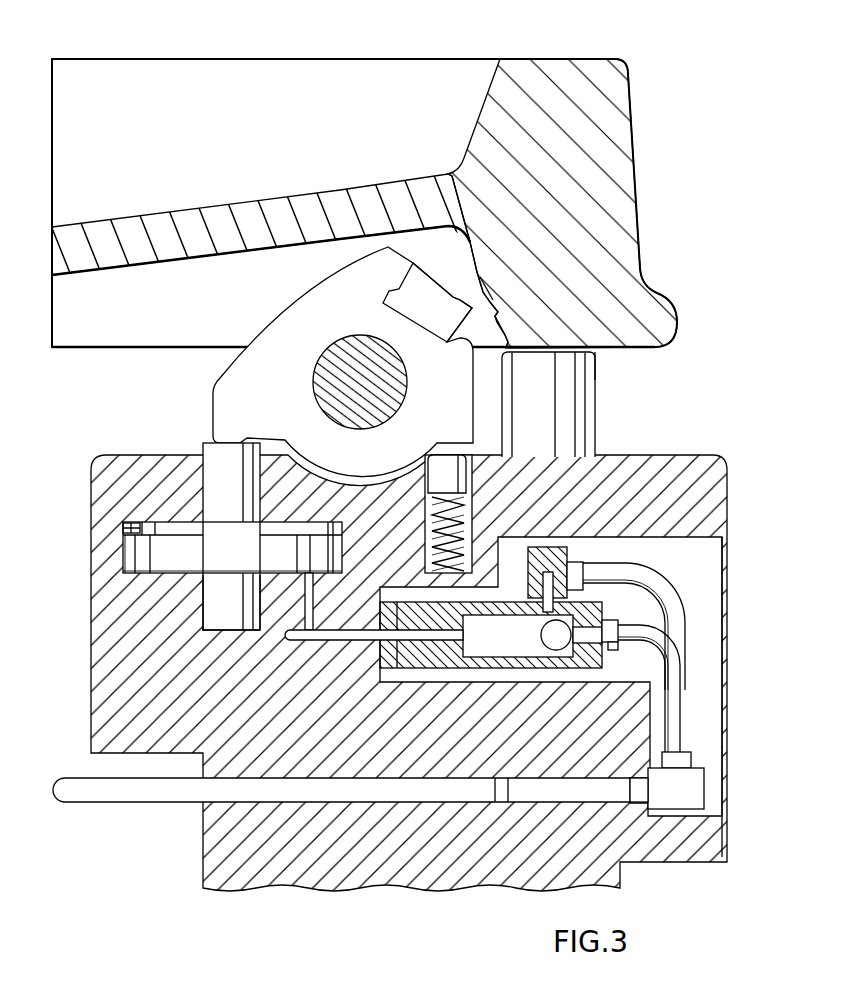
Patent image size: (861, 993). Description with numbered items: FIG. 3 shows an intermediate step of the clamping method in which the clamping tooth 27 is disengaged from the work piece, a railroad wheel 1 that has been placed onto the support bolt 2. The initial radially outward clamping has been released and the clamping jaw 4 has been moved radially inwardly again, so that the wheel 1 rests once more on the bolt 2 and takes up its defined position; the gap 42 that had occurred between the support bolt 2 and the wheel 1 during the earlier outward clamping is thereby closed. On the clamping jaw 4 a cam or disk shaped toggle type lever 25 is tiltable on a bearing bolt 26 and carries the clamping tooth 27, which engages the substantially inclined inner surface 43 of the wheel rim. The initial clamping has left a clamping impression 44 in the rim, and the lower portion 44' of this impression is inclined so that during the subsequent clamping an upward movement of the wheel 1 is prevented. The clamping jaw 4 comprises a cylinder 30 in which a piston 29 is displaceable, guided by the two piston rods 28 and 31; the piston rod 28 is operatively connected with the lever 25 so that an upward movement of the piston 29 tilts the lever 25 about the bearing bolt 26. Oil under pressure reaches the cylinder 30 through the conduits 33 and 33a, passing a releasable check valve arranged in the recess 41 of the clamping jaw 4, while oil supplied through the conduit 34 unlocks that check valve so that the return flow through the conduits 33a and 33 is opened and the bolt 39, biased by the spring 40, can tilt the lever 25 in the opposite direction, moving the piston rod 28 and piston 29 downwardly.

The railroad wheel 1 is at (565, 62).
The support bolt 2 is at (575, 432).
The clamping jaw 4 is at (693, 475).
The toggle type lever 25 is at (253, 367).
The bearing bolt 26 is at (330, 400).
The clamping tooth 27 is at (432, 285).
The piston rod 28 is at (218, 455).
The piston 29 is at (137, 549).
The cylinder 30 is at (123, 527).
The piston rod 31 is at (210, 592).
The conduit 33 is at (672, 677).
The conduit 33a is at (298, 636).
The conduit 34 is at (672, 620).
The bolt 39 is at (440, 464).
The spring 40 is at (510, 458).
The recess 41 is at (700, 560).
The gap 42 is at (602, 353).
The inclined inner surface 43 is at (473, 260).
The clamping impression 44 is at (511, 273).
The lower portion of the clamping impression 44' is at (493, 361).